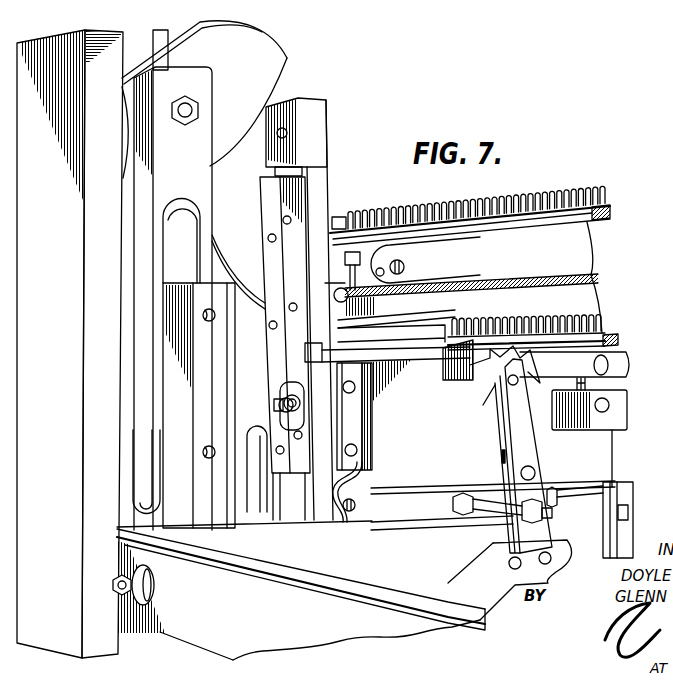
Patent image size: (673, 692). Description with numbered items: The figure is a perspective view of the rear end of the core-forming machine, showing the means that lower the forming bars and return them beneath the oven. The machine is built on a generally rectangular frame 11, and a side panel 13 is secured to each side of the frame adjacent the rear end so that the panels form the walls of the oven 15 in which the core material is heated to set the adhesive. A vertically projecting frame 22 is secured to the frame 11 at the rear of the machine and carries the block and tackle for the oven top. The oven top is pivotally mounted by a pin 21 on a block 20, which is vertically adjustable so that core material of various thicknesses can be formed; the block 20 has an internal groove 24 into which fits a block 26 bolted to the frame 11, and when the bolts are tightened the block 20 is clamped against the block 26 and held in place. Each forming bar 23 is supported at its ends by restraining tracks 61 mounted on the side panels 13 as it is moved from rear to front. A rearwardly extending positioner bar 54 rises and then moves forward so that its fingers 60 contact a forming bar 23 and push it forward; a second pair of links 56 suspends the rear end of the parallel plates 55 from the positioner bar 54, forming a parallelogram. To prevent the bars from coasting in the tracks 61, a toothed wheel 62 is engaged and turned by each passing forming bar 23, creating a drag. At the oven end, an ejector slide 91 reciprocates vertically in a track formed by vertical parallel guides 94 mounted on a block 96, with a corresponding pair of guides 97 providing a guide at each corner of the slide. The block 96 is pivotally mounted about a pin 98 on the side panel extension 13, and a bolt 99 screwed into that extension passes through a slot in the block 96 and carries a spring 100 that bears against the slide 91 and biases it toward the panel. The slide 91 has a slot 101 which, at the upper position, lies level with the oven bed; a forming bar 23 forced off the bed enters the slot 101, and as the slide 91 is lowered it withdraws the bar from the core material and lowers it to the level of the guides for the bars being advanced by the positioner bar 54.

The frame 11 is at (195, 640).
The side panel 13 is at (583, 298).
The oven 15 is at (623, 196).
The block 20 is at (192, 177).
The pin 21 is at (198, 108).
The vertically projecting frame 22 is at (56, 45).
The forming bar 23 is at (611, 212).
The groove 24 is at (166, 249).
The block 26 is at (199, 405).
The positioner bar 54 is at (617, 363).
The plate 55 is at (588, 420).
The link 56 is at (588, 389).
The finger 60 is at (470, 378).
The restraining track 61 is at (430, 330).
The toothed wheel 62 is at (483, 405).
The ejector slide 91 is at (319, 118).
The guide 94 is at (272, 226).
The block 96 is at (322, 503).
The guide 97 is at (312, 190).
The pin 98 is at (349, 512).
The bolt 99 is at (274, 404).
The spring 100 is at (288, 388).
The slot 101 is at (404, 281).